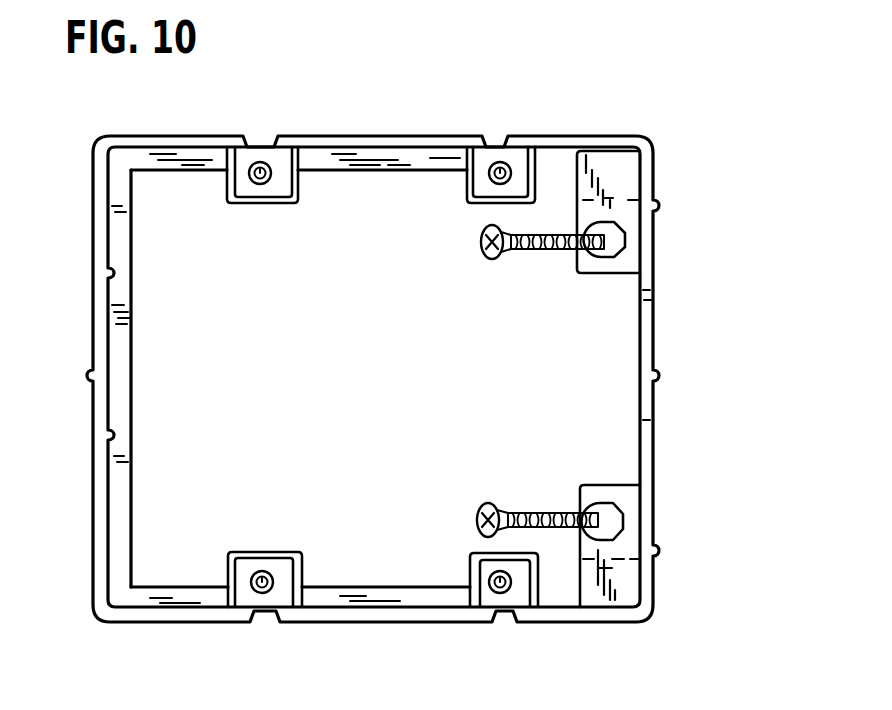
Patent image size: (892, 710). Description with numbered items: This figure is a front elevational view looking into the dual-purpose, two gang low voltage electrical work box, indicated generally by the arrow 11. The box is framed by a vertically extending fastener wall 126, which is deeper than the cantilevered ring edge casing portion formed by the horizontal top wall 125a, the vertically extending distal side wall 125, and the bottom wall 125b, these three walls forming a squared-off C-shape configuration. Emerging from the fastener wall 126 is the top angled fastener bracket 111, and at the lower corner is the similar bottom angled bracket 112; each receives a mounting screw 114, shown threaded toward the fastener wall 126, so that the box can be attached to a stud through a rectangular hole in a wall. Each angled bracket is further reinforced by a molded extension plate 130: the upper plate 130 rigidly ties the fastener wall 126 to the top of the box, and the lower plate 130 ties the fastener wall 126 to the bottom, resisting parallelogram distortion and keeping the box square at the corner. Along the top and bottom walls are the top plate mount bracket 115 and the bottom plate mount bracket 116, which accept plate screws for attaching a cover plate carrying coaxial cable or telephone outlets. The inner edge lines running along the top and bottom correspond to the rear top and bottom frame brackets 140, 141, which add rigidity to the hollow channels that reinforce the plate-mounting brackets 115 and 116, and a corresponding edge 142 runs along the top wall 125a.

The electrical box 11 is at (703, 368).
The top angled fastener bracket 111 is at (627, 262).
The bottom angled bracket 112 is at (627, 493).
The mounting screw 114 is at (521, 250).
The top plate mount bracket 115 is at (517, 155).
The bottom plate mount bracket 116 is at (483, 562).
The distal side wall 125 is at (93, 325).
The top wall 125a is at (407, 136).
The bottom wall 125b is at (384, 622).
The fastener wall 126 is at (655, 338).
The extension plate 130 is at (620, 167).
The rear top frame bracket 140 is at (333, 593).
The rear bottom frame bracket 141 is at (128, 350).
The top wall inner edge 142 is at (410, 162).